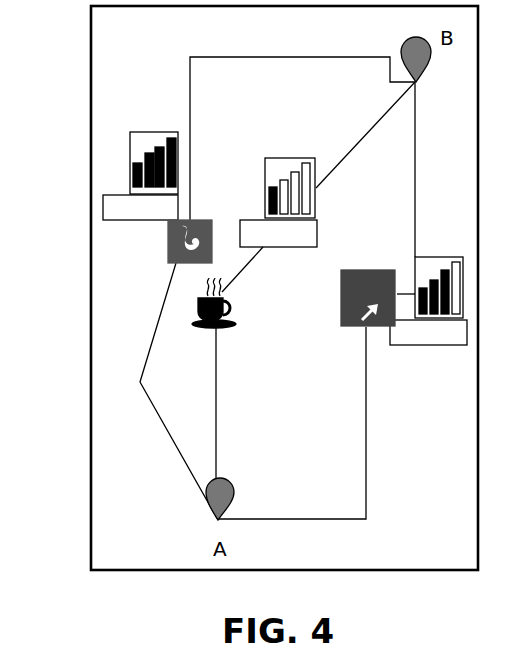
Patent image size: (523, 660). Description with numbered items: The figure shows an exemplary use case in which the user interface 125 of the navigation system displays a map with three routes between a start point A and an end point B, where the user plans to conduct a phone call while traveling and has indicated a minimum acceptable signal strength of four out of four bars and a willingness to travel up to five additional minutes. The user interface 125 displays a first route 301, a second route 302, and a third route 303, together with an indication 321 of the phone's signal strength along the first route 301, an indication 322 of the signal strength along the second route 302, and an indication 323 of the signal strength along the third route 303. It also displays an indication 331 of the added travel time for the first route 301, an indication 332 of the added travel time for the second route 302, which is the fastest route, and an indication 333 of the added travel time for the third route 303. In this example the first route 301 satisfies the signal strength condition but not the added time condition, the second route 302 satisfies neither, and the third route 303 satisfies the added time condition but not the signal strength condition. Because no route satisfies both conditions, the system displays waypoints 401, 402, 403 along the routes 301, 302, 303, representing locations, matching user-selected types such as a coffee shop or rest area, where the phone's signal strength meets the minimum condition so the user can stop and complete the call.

The user interface 125 is at (90, 120).
The first route 301 is at (166, 448).
The second route 302 is at (228, 428).
The third route 303 is at (376, 451).
The indication of signal strength along the first route 321 is at (144, 131).
The indication of signal strength along the second route 322 is at (280, 157).
The indication of signal strength along the third route 323 is at (445, 256).
The indication of added travel time for the first route 331 is at (130, 220).
The indication of added travel time for the second route 332 is at (277, 248).
The indication of added travel time for the third route 333 is at (420, 346).
The waypoint 401 is at (170, 263).
The waypoint 402 is at (235, 328).
The waypoint 403 is at (340, 307).